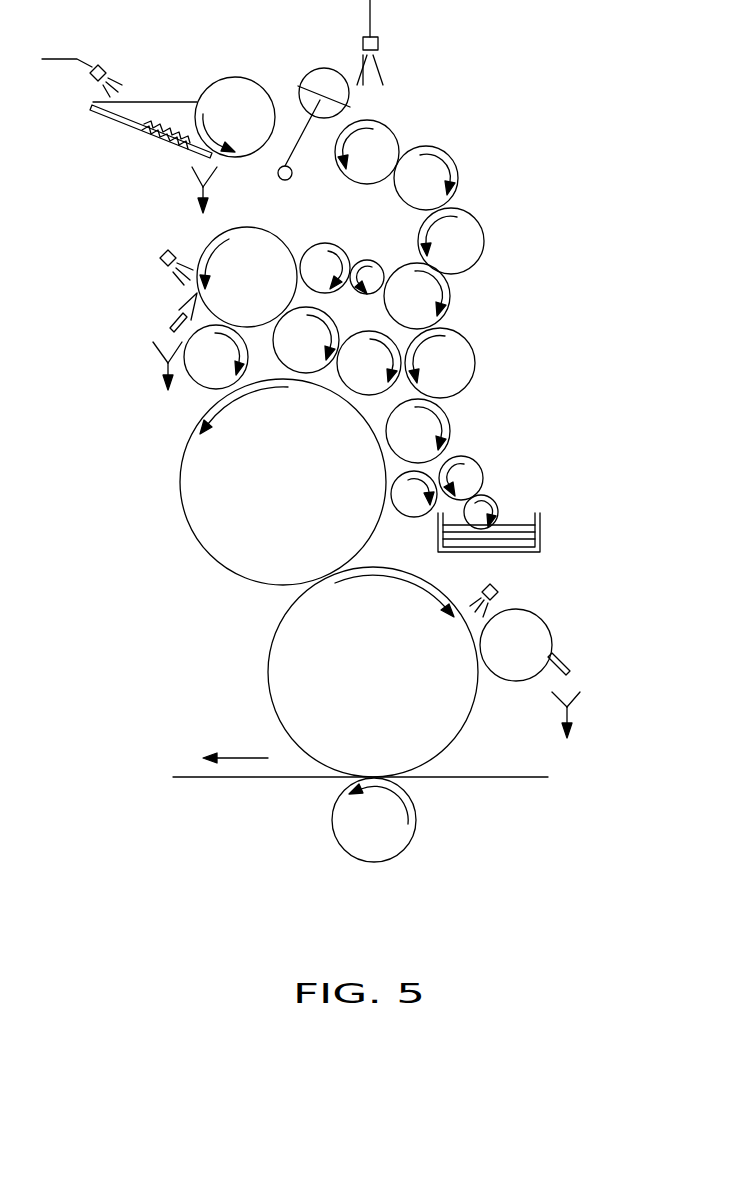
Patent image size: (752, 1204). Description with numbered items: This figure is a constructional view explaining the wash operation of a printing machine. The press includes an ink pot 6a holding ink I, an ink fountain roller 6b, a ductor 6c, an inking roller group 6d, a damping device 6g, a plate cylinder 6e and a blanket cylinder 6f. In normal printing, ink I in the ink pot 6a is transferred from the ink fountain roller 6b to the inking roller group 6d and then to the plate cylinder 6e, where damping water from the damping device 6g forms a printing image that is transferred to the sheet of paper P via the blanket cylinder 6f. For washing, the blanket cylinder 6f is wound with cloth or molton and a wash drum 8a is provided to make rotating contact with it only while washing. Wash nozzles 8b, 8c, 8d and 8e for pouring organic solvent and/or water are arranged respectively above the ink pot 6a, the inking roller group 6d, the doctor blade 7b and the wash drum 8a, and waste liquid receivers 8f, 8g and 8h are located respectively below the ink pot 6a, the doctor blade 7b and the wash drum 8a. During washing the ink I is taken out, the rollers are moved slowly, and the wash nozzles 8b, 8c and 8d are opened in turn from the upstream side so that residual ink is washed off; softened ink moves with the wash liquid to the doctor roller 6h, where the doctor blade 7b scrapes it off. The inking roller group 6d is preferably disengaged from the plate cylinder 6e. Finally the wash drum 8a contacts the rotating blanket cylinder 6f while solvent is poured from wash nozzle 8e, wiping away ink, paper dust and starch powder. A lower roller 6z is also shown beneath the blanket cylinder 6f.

The ink pot 6a is at (110, 118).
The ink I is at (177, 127).
The ink fountain roller 6b is at (247, 78).
The wash nozzle 8b is at (104, 66).
The ductor 6c is at (322, 68).
The wash nozzle 8c is at (378, 43).
The waste liquid receiver 8f is at (192, 177).
The doctor roller 6h is at (213, 240).
The wash nozzle 8d is at (162, 253).
The doctor blade 7b is at (167, 322).
The waste liquid receiver 8g is at (155, 350).
The inking roller group 6d is at (508, 125).
The plate cylinder 6e is at (180, 482).
The damping device 6g is at (508, 483).
The blanket cylinder 6f is at (268, 672).
The wash nozzle 8e is at (498, 585).
The wash drum 8a is at (538, 642).
The waste liquid receiver 8h is at (580, 697).
The sheet of paper P is at (498, 777).
The impression cylinder 6z is at (417, 830).